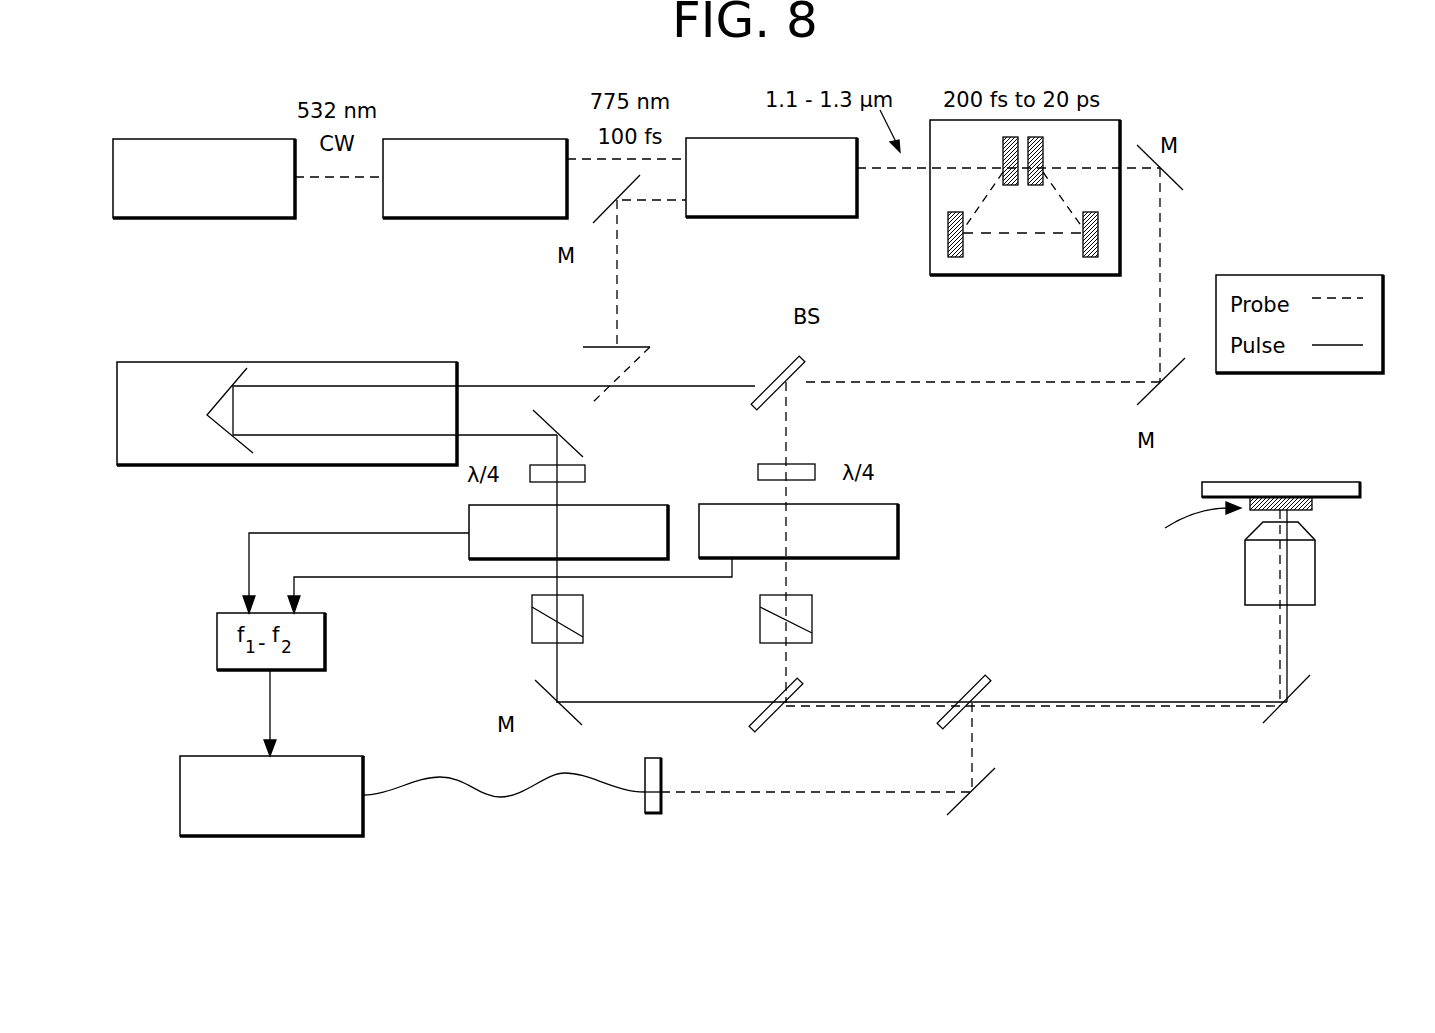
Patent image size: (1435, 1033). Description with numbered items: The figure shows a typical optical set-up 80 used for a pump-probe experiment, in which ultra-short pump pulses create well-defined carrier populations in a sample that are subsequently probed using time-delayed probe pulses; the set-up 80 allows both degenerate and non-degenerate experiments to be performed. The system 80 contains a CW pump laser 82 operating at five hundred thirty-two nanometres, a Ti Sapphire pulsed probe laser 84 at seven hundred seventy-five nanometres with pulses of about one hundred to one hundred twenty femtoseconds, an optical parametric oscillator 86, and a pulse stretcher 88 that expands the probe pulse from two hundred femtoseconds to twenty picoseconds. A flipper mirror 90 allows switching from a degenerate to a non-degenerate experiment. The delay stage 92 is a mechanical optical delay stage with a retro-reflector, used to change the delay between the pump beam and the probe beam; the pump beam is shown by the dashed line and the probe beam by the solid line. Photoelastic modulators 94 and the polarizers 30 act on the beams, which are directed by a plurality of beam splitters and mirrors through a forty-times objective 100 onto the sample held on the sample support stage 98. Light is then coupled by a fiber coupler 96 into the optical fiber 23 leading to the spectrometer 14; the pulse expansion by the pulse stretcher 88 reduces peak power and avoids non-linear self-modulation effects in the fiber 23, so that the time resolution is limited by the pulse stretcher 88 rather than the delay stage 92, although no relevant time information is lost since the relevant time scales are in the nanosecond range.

The CW pump laser 82 is at (210, 139).
The Ti Sapphire pulsed probe laser 84 is at (485, 139).
The optical parametric oscillator 86 is at (775, 218).
The pulse stretcher 88 is at (930, 238).
The flipper mirror 90 is at (665, 348).
The delay stage 92 is at (357, 362).
The photoelastic modulators 94 is at (732, 504).
The fiber coupler 96 is at (661, 806).
The sample support stage 98 is at (1360, 490).
The 40× objective 100 is at (1315, 572).
The polarizers 30 is at (583, 637).
The spectrometer 14 is at (342, 836).
The fiber 23 is at (500, 797).
The optical set-up 80 is at (1179, 738).